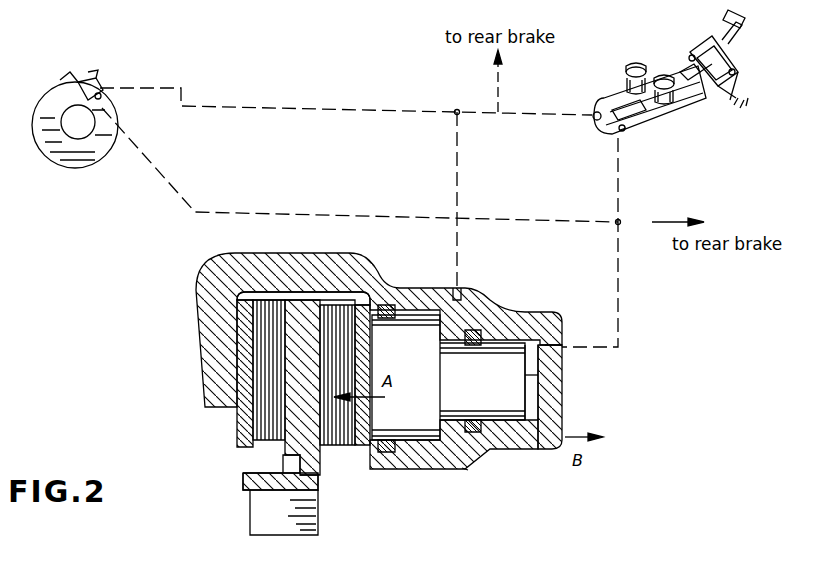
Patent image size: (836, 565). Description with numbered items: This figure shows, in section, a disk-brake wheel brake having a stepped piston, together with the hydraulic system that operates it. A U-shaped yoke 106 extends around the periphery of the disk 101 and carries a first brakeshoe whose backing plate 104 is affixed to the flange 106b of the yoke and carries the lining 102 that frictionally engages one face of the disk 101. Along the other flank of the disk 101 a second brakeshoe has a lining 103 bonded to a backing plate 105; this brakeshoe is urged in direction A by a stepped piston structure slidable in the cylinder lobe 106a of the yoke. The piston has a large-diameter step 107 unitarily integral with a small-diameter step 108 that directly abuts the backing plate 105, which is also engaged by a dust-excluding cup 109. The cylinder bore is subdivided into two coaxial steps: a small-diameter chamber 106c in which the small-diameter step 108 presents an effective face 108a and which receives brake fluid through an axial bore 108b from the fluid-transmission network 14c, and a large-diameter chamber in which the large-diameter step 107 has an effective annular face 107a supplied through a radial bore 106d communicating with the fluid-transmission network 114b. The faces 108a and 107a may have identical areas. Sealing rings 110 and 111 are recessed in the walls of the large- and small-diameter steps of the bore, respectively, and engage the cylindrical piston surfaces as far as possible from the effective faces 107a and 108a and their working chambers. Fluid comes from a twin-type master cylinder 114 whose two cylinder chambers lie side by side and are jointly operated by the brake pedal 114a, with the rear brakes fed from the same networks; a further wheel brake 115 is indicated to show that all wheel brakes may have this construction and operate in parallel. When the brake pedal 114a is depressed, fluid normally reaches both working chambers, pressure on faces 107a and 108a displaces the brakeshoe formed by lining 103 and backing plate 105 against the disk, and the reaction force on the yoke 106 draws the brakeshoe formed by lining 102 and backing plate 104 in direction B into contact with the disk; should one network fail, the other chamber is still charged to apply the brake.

The further wheel brake 115 is at (37, 90).
The master cylinder 114 is at (660, 118).
The brake pedal 114a is at (745, 26).
The fluid-transmission network 114b is at (457, 112).
The fluid-transmission network 14c is at (618, 222).
The U-shaped yoke 106 is at (306, 262).
The cylinder lobe 106a is at (468, 472).
The flange 106b is at (215, 330).
The small-diameter chamber 106c is at (530, 410).
The radial bore 106d is at (468, 290).
The backing plate 104 is at (241, 360).
The backing plate 105 is at (364, 352).
The lining 102 is at (262, 420).
The lining 103 is at (335, 447).
The disk 101 is at (255, 477).
The large-diameter step 107 is at (416, 432).
The effective annular face 107a is at (440, 363).
The small-diameter step 108 is at (500, 432).
The effective face 108a is at (540, 378).
The axial bore 108b is at (548, 346).
The dust-excluding cup 109 is at (373, 450).
The sealing ring 110 is at (390, 303).
The sealing ring 111 is at (478, 332).